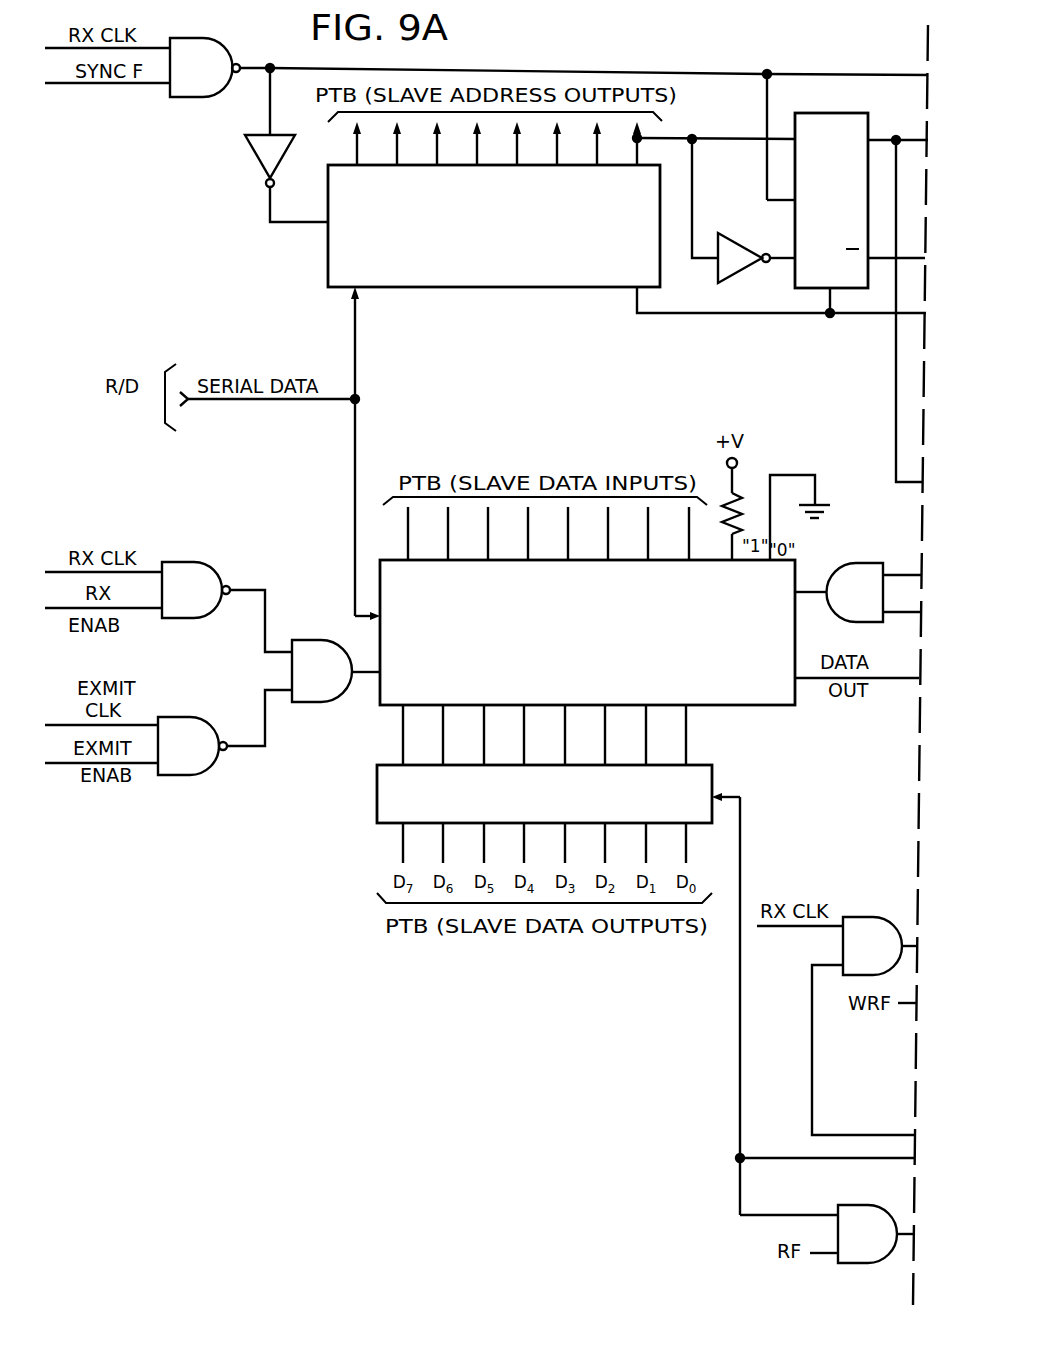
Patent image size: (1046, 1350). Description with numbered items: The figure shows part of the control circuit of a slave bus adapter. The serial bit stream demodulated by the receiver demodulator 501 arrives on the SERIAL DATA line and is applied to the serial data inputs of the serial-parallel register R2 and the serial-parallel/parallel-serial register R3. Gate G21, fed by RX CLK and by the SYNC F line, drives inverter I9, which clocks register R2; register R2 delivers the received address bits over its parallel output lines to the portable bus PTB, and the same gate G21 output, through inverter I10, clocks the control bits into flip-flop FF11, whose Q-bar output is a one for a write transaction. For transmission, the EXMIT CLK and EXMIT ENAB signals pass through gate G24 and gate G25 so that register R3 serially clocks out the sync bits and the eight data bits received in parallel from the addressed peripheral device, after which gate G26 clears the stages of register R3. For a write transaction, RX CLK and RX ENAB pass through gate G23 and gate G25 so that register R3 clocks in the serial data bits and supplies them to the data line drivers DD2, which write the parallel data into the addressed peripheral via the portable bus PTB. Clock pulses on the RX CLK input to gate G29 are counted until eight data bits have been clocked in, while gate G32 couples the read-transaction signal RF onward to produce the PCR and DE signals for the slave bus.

The gate G21 is at (205, 67).
The inverter I9 is at (260, 156).
The serial-parallel register R2 is at (550, 278).
The inverter I10 is at (740, 247).
The flip-flop register stage FF11 is at (831, 200).
The receiver demodulator 501 is at (138, 397).
The gate G23 is at (196, 590).
The gate G24 is at (192, 746).
The gate G25 is at (322, 671).
The serial-parallel/parallel-serial register R3 is at (718, 697).
The gate G26 is at (855, 592).
The data line drivers DD2 is at (381, 805).
The gate G29 is at (872, 946).
The gate G32 is at (867, 1234).